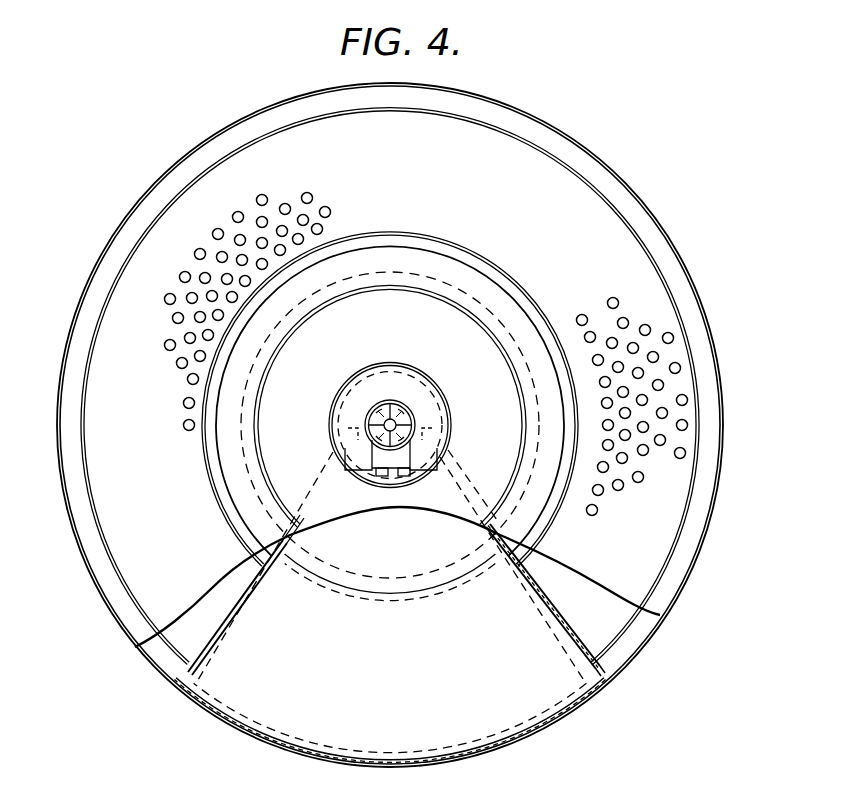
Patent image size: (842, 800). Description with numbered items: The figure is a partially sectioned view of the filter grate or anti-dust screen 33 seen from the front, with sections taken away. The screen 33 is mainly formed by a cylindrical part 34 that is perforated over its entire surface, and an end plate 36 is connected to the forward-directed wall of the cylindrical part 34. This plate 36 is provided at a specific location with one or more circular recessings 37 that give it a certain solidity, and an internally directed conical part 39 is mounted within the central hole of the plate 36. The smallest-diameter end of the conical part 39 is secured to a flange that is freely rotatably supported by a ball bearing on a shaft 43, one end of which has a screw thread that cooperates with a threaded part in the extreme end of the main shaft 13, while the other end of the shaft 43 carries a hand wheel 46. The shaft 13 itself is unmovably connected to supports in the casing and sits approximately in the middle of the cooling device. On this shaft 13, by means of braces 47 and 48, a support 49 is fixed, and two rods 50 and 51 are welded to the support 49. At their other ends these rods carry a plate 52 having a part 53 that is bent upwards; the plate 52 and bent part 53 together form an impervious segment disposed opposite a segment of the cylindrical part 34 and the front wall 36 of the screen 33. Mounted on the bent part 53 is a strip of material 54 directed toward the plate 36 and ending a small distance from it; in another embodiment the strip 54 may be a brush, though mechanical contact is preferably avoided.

The shaft 13 is at (417, 400).
The screen 33 is at (610, 162).
The cylindrical part 34 is at (261, 109).
The end plate 36 is at (604, 208).
The circular recessings 37 is at (462, 257).
The conical part 39 is at (401, 257).
The shaft 43 is at (368, 410).
The hand wheel 46 is at (413, 416).
The brace 47 is at (345, 450).
The brace 48 is at (438, 452).
The support 49 is at (388, 476).
The rod 50 is at (287, 543).
The rod 51 is at (497, 538).
The plate 52 is at (186, 693).
The bent part 53 is at (593, 698).
The strip of material 54 is at (556, 604).